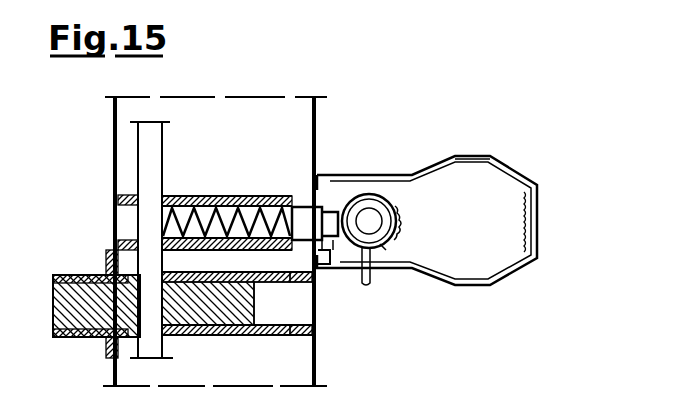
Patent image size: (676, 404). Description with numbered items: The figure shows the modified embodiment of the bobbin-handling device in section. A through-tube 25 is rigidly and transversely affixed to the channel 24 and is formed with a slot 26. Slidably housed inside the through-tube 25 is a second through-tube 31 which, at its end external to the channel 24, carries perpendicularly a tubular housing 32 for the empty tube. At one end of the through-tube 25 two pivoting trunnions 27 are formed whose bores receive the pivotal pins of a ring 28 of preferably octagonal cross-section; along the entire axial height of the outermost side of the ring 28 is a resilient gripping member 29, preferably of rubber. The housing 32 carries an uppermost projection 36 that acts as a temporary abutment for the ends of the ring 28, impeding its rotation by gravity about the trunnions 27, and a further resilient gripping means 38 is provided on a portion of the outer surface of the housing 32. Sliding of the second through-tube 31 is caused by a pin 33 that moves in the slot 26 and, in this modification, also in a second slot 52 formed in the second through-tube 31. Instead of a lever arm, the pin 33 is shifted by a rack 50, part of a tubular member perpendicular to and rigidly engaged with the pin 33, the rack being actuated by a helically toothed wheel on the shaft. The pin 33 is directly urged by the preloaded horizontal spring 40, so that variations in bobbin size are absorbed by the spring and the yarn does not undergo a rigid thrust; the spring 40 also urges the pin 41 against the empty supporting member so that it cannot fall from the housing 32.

The channel 24 is at (316, 149).
The through-tube 25 is at (297, 200).
The slot 26 is at (220, 198).
The pivoting trunnions 27 is at (335, 173).
The ring 28 is at (468, 157).
The resilient gripping member 29 is at (523, 224).
The second through-tube 31 is at (272, 198).
The tubular housing 32 is at (384, 246).
The pin 33 is at (150, 152).
The projection 36 is at (366, 286).
The resilient gripping means 38 is at (400, 220).
The spring 40 is at (242, 198).
The pin 41 is at (330, 265).
The rack 50 is at (213, 300).
The second slot 52 is at (176, 198).